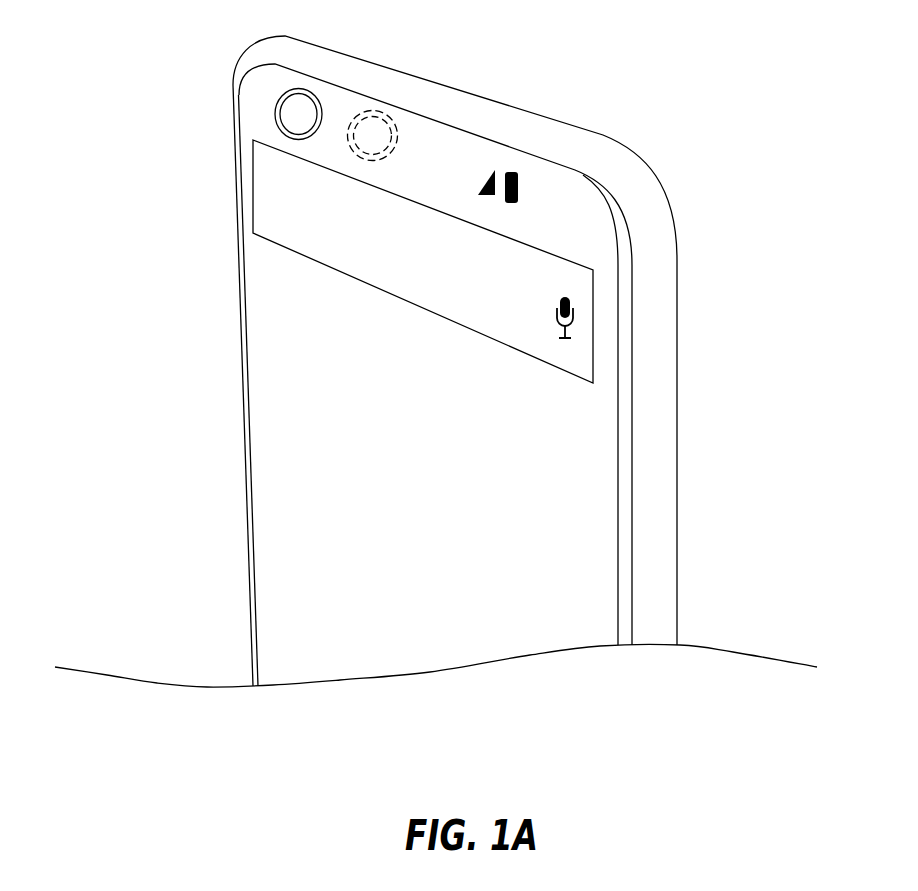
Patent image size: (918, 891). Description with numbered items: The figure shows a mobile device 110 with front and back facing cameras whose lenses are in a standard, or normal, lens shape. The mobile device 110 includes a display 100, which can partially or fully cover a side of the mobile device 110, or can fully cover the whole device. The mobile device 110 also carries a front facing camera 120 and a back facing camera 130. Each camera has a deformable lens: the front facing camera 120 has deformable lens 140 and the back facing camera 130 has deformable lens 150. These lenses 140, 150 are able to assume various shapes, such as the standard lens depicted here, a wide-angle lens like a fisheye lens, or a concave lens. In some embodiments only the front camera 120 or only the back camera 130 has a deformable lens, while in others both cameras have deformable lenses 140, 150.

The display 100 is at (396, 352).
The mobile device 110 is at (237, 73).
The front facing camera 120 is at (277, 103).
The back facing camera 130 is at (373, 112).
The deformable lens 140 is at (279, 127).
The deformable lens 150 is at (393, 120).